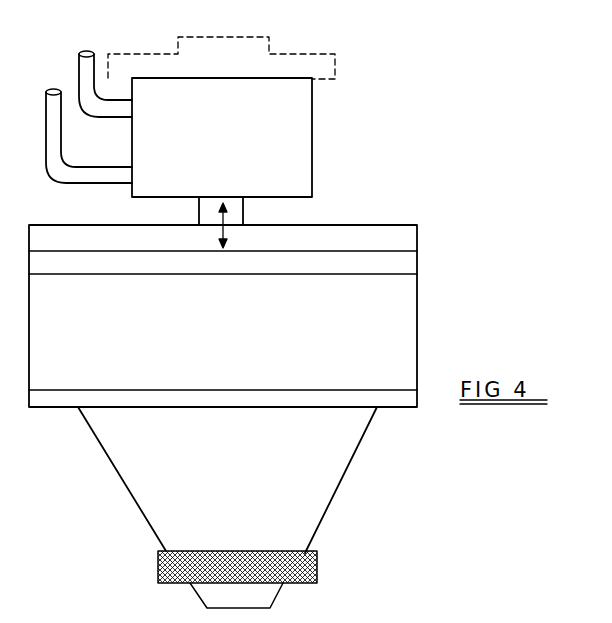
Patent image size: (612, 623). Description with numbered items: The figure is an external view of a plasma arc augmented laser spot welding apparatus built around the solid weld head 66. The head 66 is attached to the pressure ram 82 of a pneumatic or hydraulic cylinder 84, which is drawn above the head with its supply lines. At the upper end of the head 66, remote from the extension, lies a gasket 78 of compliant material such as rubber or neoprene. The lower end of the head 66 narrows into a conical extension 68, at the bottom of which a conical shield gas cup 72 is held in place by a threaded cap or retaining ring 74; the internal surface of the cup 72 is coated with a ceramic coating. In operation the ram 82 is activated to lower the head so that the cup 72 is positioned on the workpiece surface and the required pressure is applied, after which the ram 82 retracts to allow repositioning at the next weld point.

The weld head 66 is at (410, 332).
The conical extension 68 is at (323, 480).
The shield gas cup 72 is at (268, 595).
The threaded cap 74 is at (318, 565).
The gasket 78 is at (402, 264).
The pressure ram 82 is at (243, 207).
The cylinder 84 is at (302, 154).